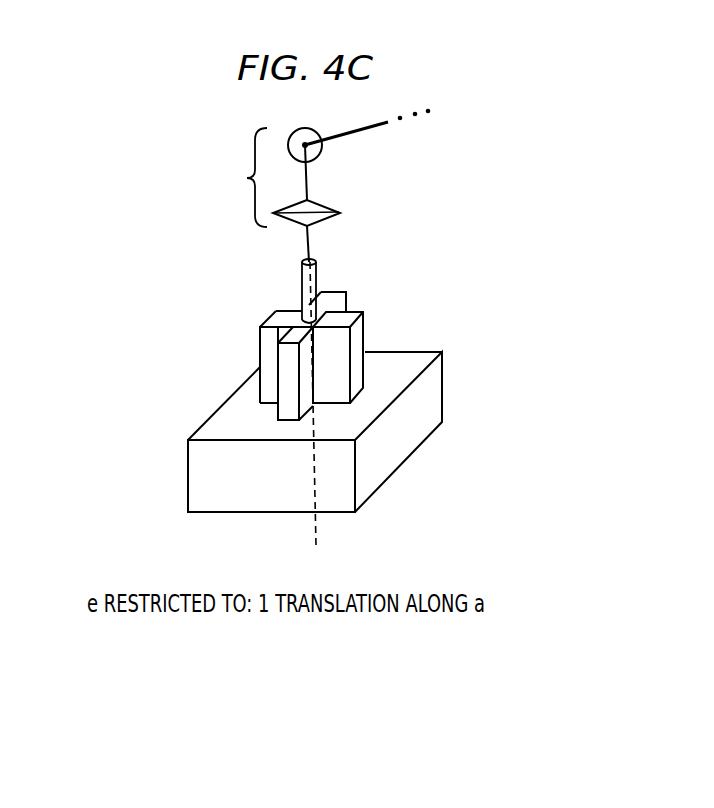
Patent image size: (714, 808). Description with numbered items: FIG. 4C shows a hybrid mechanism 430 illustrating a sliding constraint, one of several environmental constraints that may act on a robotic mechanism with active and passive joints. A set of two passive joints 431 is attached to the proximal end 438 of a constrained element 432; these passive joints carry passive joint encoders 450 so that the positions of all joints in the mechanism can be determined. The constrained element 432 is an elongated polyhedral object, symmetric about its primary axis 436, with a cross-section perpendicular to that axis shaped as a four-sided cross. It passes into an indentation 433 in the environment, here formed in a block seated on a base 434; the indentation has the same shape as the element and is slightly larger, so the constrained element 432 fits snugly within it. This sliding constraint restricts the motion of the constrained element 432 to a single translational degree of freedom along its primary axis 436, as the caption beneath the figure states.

The kinematic mechanism 430 is at (484, 168).
The set of two passive joints 431 is at (241, 177).
The passive joint encoders 450 is at (320, 152).
The proximal end 438 is at (318, 259).
The constrained element 432 is at (277, 319).
The indentation 433 is at (362, 397).
The base 434 is at (235, 407).
The primary axis 436 is at (318, 513).